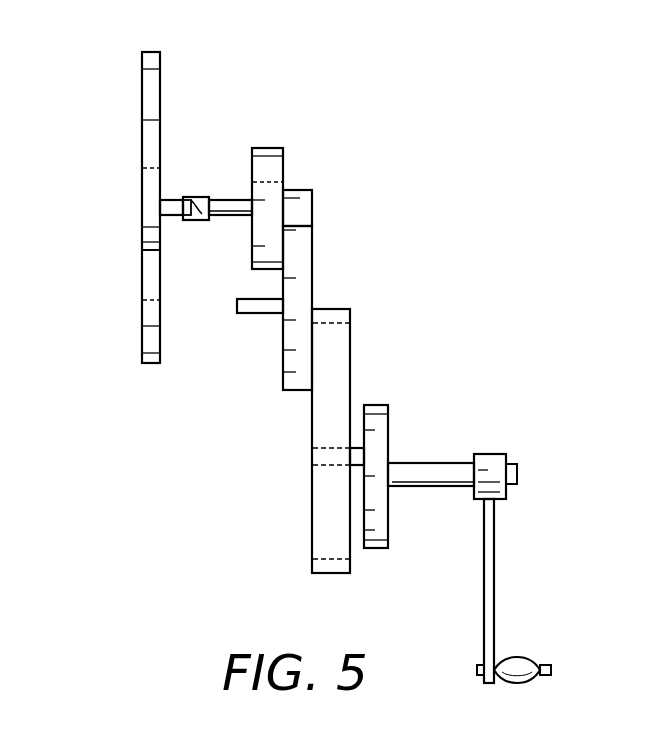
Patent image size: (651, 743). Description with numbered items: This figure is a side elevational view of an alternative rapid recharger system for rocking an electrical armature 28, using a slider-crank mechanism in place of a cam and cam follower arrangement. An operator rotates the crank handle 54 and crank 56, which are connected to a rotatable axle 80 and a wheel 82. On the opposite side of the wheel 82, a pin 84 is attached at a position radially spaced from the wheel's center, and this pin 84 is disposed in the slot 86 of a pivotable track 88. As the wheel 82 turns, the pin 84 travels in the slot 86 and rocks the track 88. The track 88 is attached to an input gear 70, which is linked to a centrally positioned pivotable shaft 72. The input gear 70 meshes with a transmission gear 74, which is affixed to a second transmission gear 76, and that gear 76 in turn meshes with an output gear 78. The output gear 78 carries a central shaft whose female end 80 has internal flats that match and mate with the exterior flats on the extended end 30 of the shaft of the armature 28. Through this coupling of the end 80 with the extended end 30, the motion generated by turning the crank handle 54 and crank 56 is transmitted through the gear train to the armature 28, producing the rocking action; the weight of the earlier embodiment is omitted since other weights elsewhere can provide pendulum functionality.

The armature 28 is at (142, 181).
The extended end of armature shaft 30 is at (190, 216).
The crank handle 54 is at (522, 660).
The crank 56 is at (495, 576).
The input gear 70 is at (312, 252).
The pivotable shaft 72 is at (255, 313).
The transmission gear 74 is at (297, 190).
The transmission gear 76 is at (268, 148).
The output gear 78 is at (262, 220).
The axle / central shaft end 80 is at (200, 197).
The wheel 82 is at (390, 440).
The pin 84 is at (357, 448).
The slot 86 is at (327, 513).
The pivotable track 88 is at (322, 573).